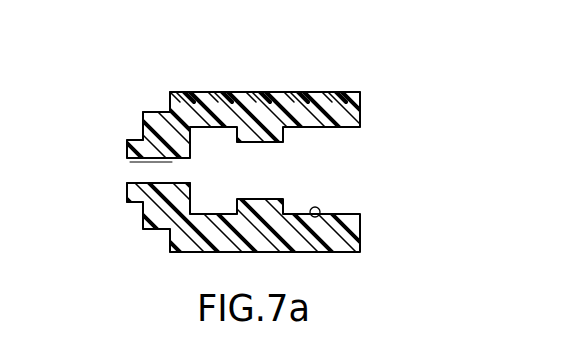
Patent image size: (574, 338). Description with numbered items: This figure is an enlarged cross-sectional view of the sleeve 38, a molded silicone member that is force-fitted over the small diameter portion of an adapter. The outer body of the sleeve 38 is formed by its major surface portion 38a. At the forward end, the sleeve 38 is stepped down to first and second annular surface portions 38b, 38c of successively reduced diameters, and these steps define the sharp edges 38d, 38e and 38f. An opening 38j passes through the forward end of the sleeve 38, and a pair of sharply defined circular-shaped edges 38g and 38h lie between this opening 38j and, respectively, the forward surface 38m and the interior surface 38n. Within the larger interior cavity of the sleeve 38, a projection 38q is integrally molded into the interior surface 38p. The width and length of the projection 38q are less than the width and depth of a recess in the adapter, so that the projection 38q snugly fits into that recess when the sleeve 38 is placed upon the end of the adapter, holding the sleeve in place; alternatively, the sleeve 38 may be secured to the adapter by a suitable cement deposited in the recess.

The sleeve 38 is at (297, 70).
The major surface portion 38a is at (335, 92).
The first annular surface portion 38b is at (167, 110).
The second annular surface portion 38c is at (140, 127).
The sharp edge 38d is at (170, 92).
The sharp edge 38e is at (145, 112).
The sharp edge 38f is at (126, 203).
The circular-shaped edge 38g is at (126, 150).
The circular-shaped edge 38h is at (190, 180).
The opening 38j is at (127, 170).
The forward surface 38m is at (127, 200).
The interior surface 38n is at (190, 198).
The interior surface 38p is at (312, 217).
The projection 38q is at (270, 142).